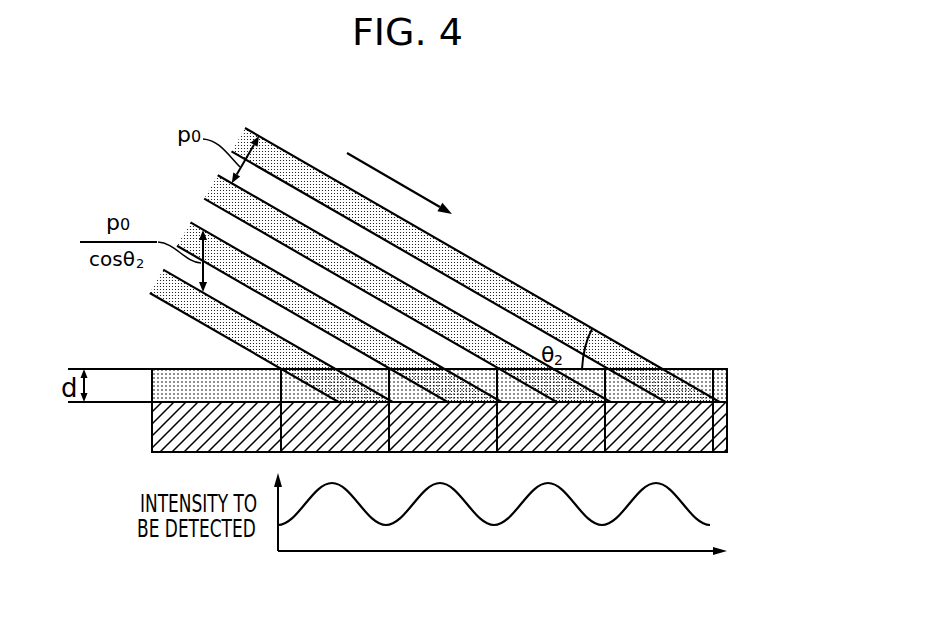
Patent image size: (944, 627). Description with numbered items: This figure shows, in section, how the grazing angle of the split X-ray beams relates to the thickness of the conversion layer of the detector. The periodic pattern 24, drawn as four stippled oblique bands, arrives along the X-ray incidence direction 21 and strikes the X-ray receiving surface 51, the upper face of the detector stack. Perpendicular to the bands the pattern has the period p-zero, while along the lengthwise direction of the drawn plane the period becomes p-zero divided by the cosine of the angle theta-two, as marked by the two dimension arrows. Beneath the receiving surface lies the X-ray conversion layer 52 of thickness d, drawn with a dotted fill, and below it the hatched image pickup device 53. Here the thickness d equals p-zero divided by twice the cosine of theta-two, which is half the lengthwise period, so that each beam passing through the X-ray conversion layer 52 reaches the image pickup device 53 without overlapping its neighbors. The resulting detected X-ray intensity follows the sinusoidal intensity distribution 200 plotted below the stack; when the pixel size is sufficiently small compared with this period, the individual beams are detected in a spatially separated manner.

The X-ray incidence direction 21 is at (393, 180).
The periodic pattern 24 is at (284, 150).
The X-ray receiving surface 51 is at (716, 369).
The X-ray conversion layer 52 is at (730, 369).
The image pickup device 53 is at (730, 403).
The intensity distribution 200 is at (684, 500).